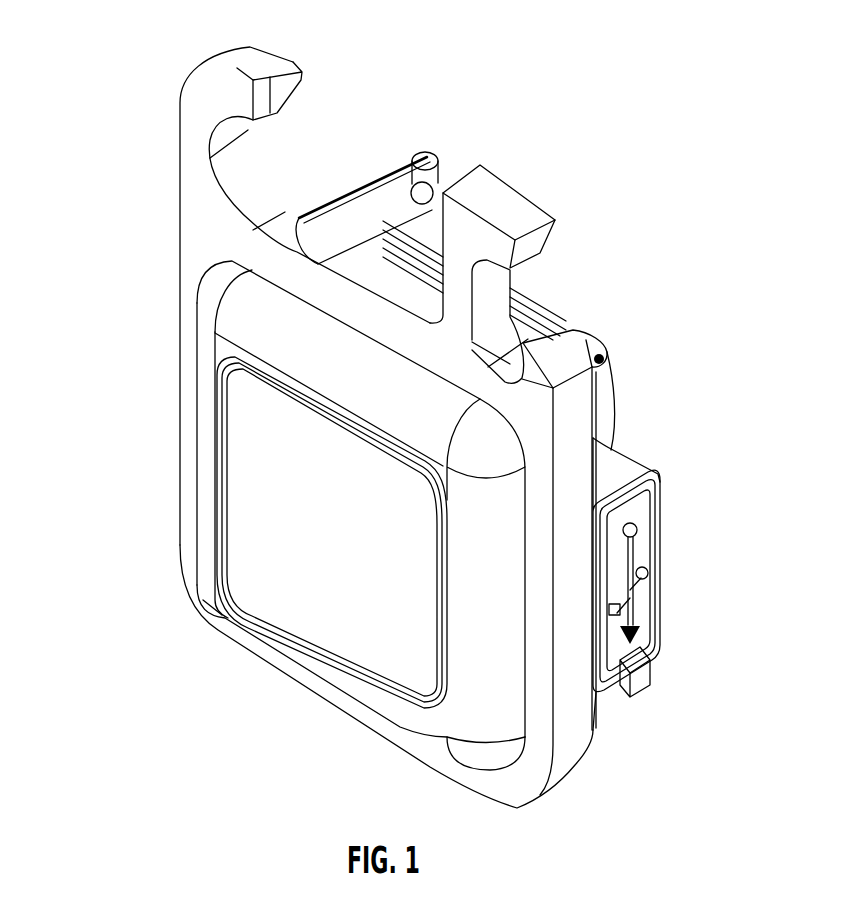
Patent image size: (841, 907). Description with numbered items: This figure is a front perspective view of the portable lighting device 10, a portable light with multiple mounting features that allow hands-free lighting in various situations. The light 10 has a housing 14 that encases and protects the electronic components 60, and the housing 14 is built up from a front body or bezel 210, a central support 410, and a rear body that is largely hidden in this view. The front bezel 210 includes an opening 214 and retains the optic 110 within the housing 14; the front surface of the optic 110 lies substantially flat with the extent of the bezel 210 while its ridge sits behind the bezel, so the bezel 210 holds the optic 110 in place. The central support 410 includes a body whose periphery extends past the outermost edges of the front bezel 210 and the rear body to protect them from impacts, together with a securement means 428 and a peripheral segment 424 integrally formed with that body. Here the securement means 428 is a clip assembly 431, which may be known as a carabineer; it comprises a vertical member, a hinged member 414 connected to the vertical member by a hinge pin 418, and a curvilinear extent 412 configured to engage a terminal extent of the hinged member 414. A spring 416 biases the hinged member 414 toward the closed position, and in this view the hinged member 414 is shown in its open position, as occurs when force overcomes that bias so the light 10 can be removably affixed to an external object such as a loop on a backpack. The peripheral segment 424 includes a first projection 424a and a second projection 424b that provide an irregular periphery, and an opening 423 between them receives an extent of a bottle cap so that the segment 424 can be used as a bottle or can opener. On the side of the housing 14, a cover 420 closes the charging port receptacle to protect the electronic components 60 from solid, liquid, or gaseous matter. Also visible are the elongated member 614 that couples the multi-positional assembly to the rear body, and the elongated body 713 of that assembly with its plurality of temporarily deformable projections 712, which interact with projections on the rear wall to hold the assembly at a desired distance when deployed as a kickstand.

The portable lighting device 10 is at (116, 107).
The housing 14 is at (137, 447).
The electronic components 60 is at (365, 612).
The optic 110 is at (253, 442).
The front bezel 210 is at (240, 312).
The opening 214 is at (270, 583).
The central support 410 is at (196, 249).
The curvilinear extent 412 is at (240, 93).
The hinged member 414 is at (323, 231).
The spring 416 is at (340, 197).
The hinge pin 418 is at (443, 153).
The cover 420 is at (640, 508).
The opening 423 is at (557, 265).
The peripheral segment 424 is at (632, 177).
The first projection 424a is at (524, 207).
The second projection 424b is at (577, 334).
The securement means 428 is at (347, 100).
The clip assembly 431 is at (229, 144).
The elongated member 614 is at (603, 354).
The plurality of projections 712 is at (557, 298).
The elongated body 713 is at (535, 323).